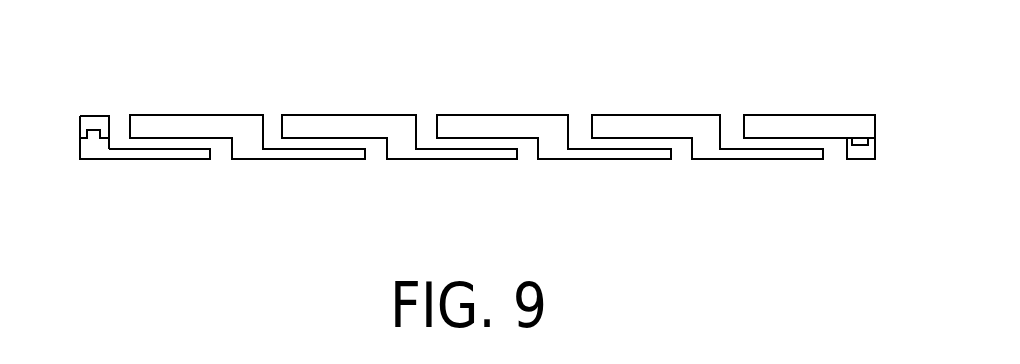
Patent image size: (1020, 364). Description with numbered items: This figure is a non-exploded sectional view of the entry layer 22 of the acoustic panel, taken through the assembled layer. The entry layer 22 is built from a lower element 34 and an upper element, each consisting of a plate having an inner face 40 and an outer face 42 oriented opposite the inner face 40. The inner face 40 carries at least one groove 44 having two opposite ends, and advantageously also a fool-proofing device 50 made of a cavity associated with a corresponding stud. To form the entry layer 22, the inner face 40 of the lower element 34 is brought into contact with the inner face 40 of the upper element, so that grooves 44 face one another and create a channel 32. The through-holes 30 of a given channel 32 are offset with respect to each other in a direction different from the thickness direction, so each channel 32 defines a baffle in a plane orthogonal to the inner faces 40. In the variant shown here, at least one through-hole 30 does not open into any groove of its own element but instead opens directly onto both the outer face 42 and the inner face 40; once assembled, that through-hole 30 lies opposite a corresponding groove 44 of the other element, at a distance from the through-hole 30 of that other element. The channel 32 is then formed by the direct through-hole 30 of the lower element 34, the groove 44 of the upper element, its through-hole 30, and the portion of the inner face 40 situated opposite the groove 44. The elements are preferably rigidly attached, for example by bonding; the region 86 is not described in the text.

The entry layer 22 is at (896, 149).
The through-hole 30 is at (120, 120).
The channel 32 is at (176, 139).
The lower element 34 is at (858, 174).
The inner face 40 is at (402, 140).
The outer face 42 is at (797, 115).
The groove 44 is at (462, 146).
The fool-proofing device 50 is at (116, 189).
The junction region 86 is at (815, 139).